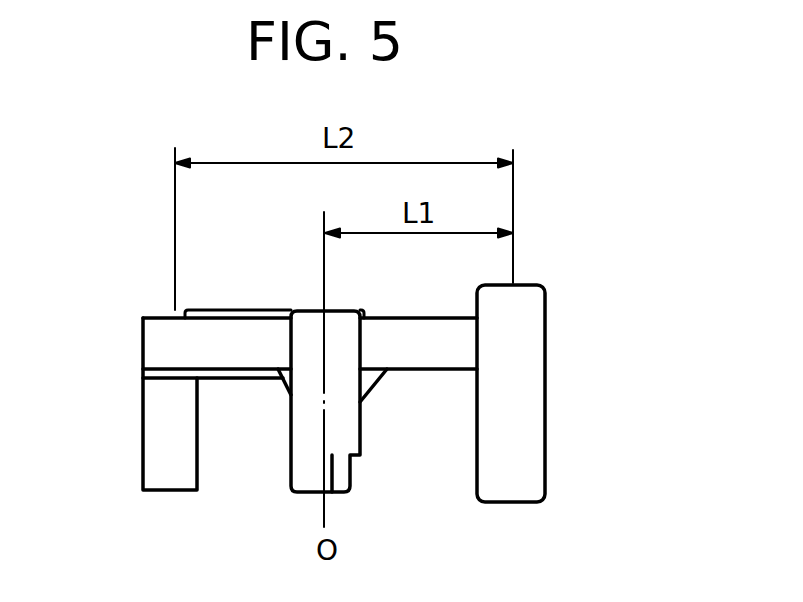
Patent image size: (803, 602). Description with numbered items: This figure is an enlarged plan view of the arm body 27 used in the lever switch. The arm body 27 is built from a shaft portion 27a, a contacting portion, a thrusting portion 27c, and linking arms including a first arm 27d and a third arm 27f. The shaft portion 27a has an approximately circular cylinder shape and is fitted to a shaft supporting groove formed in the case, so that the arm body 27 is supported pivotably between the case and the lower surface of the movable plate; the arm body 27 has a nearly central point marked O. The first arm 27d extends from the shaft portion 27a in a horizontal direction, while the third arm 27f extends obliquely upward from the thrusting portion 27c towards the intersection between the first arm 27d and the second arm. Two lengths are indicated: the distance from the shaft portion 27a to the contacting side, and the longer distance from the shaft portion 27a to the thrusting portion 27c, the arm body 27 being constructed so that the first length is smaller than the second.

The arm body 27 is at (546, 355).
The shaft portion 27a is at (527, 430).
The thrusting portion 27c is at (152, 441).
The first arm 27d is at (432, 358).
The third arm 27f is at (250, 360).